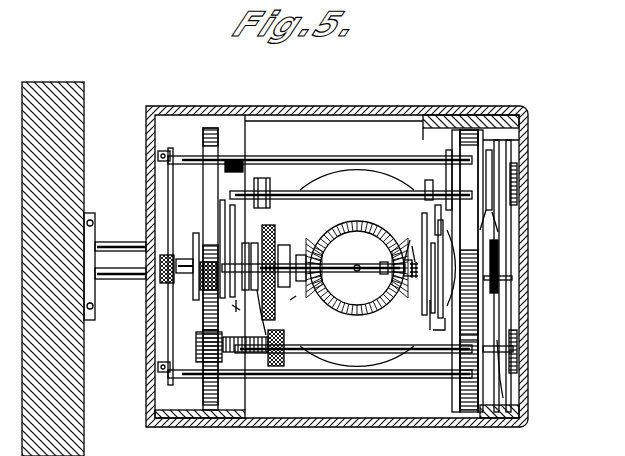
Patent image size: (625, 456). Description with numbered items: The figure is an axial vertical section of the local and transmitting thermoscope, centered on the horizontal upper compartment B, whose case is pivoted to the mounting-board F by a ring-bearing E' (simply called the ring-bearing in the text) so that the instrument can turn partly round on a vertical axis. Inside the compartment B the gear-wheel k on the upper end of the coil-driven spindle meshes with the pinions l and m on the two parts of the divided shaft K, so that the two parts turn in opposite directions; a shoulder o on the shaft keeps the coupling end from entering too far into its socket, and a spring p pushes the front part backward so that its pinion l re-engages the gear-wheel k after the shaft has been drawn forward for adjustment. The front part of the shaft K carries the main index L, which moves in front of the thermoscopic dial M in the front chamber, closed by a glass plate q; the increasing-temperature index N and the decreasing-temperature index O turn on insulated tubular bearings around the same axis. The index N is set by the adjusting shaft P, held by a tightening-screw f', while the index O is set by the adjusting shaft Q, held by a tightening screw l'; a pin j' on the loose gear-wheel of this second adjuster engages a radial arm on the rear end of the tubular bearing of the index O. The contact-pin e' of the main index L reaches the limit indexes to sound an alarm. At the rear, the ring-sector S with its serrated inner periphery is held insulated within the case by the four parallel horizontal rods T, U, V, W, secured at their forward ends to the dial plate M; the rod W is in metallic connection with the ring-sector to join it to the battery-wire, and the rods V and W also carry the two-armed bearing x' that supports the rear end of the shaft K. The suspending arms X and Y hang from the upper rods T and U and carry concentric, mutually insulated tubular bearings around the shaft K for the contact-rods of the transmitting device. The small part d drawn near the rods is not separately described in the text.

The mounting-board F is at (22, 246).
The ring-bearing E' is at (115, 266).
The upper compartment-case B is at (318, 111).
The two-armed bearing x' is at (168, 266).
The ring-sector S is at (191, 269).
The horizontal rod V is at (320, 155).
The collar d is at (259, 187).
The horizontal rod T is at (351, 204).
The horizontal rod U is at (347, 348).
The horizontal rod W is at (320, 382).
The suspending arm X is at (270, 212).
The suspending arm Y is at (282, 318).
The pin j' is at (232, 312).
The pinion m is at (298, 304).
The divided shaft K is at (366, 254).
The gear-wheel k is at (355, 255).
The shoulder o is at (378, 276).
The pinion l is at (404, 283).
The spring p is at (410, 250).
The glass plate q is at (526, 222).
The main index L is at (520, 244).
The increasing-temperature index N is at (528, 205).
The thermoscopic dial M is at (528, 129).
The decreasing-temperature index O is at (528, 162).
The adjusting shaft Q is at (491, 216).
The tightening screw l' is at (538, 183).
The contact-pin e' is at (532, 266).
The tightening-screw f' is at (524, 351).
The adjusting shaft P is at (505, 371).